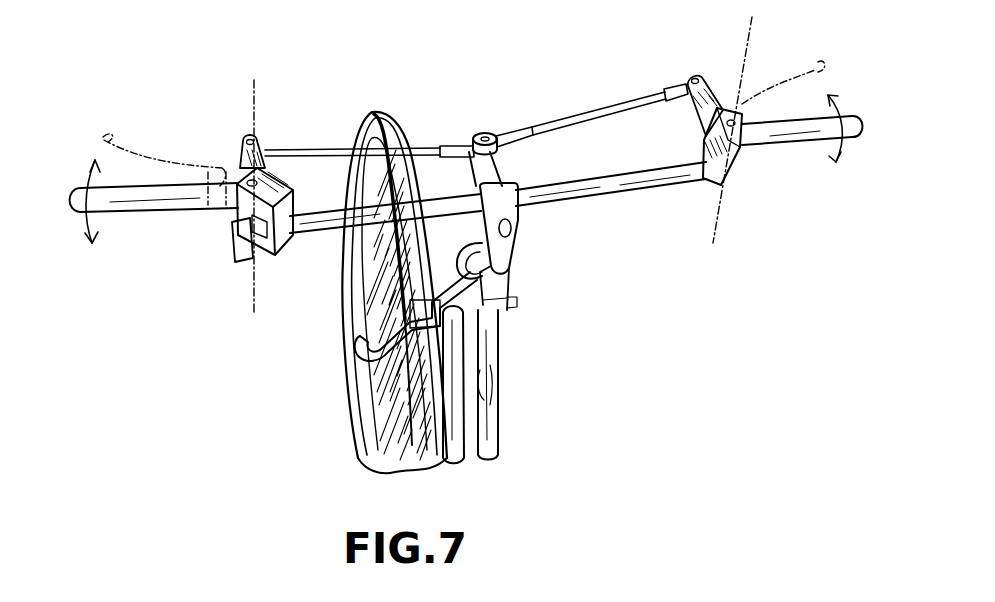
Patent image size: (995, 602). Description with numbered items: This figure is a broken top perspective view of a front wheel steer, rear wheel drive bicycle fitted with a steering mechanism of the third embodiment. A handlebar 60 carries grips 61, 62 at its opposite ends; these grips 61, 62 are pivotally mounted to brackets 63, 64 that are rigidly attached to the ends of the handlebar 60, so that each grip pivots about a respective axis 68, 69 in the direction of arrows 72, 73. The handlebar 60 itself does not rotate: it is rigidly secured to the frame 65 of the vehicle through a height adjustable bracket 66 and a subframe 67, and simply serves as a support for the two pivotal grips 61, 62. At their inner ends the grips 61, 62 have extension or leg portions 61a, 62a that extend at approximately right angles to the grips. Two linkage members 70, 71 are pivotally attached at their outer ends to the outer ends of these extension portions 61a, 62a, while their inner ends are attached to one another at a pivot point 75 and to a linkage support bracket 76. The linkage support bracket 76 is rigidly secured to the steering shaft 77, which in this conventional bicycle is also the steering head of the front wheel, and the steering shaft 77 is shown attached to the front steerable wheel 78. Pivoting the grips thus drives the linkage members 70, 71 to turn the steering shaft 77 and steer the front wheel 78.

The handlebar 60 is at (603, 198).
The grip 61 is at (802, 150).
The extension or leg portion 61a is at (711, 86).
The grip 62 is at (138, 222).
The extension or leg portion 62a is at (236, 138).
The bracket 63 is at (704, 137).
The bracket 64 is at (280, 196).
The frame 65 is at (512, 441).
The height adjustable bracket 66 is at (516, 265).
The subframe 67 is at (504, 322).
The axis 68 is at (750, 47).
The axis 69 is at (256, 90).
The linkage member 70 is at (618, 100).
The linkage member 71 is at (416, 146).
The arrow 72 is at (850, 98).
The arrow 73 is at (80, 224).
The pivot point 75 is at (488, 132).
The linkage support bracket 76 is at (500, 172).
The steering shaft 77 is at (478, 257).
The front steerable wheel 78 is at (345, 284).